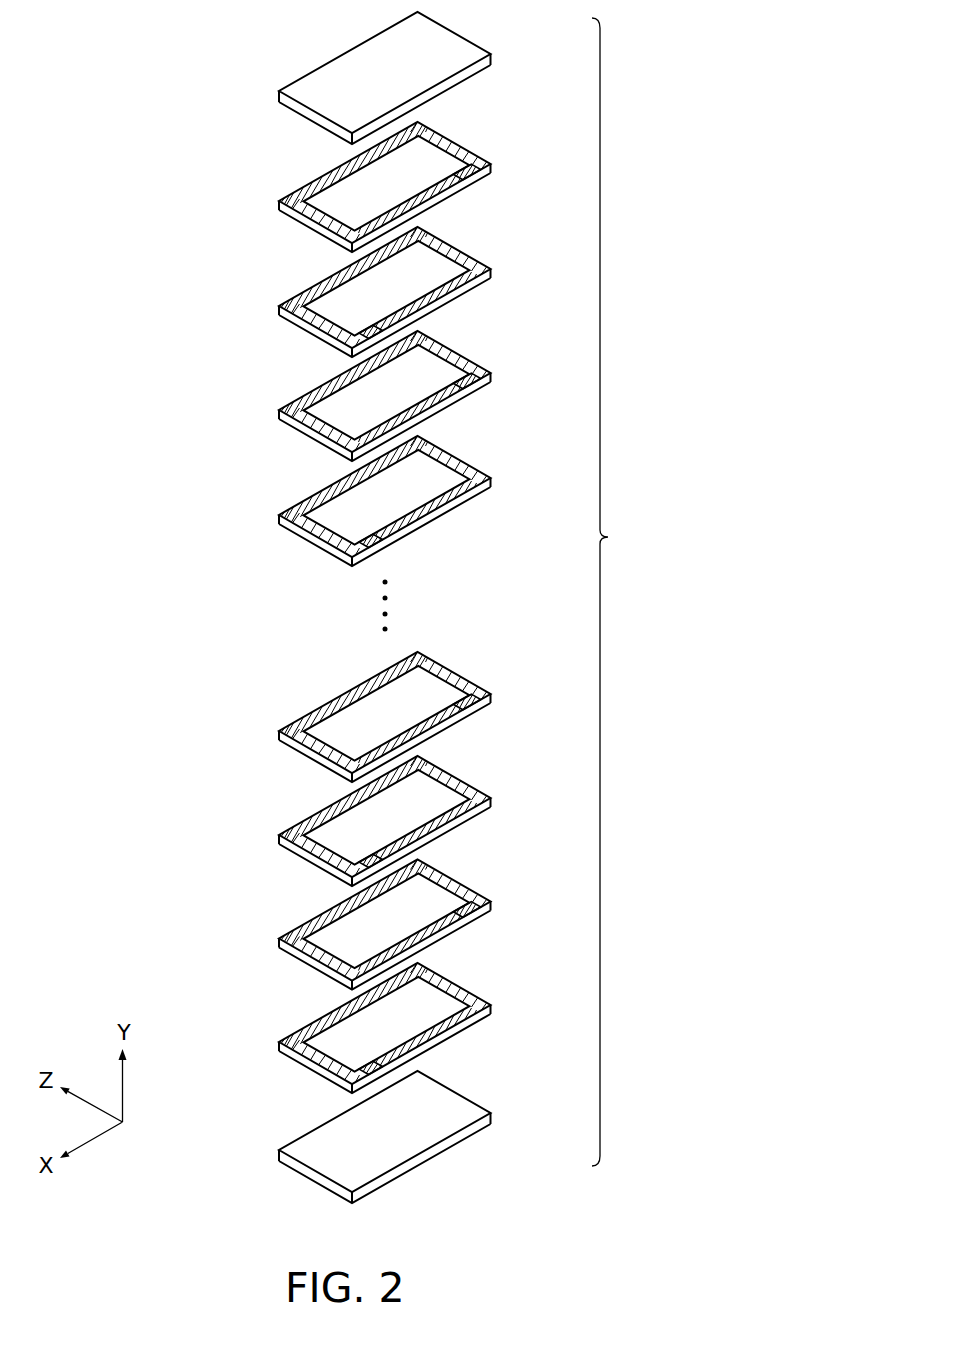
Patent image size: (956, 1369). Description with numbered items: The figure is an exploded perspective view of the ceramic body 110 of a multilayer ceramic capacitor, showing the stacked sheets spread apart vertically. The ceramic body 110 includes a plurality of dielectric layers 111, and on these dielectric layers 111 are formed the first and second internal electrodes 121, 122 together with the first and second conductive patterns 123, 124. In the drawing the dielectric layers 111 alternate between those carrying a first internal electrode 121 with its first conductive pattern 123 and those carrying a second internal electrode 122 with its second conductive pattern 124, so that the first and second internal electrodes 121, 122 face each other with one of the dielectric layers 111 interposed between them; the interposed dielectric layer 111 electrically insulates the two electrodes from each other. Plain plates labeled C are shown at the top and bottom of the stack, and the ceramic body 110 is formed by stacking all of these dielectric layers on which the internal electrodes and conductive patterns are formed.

The ceramic body 110 is at (623, 592).
The dielectric layer 111 is at (430, 607).
The first internal electrode 121 is at (443, 530).
The second internal electrode 122 is at (443, 634).
The first conductive pattern 123 is at (517, 544).
The second conductive pattern 124 is at (470, 670).
The cover layer C is at (420, 607).